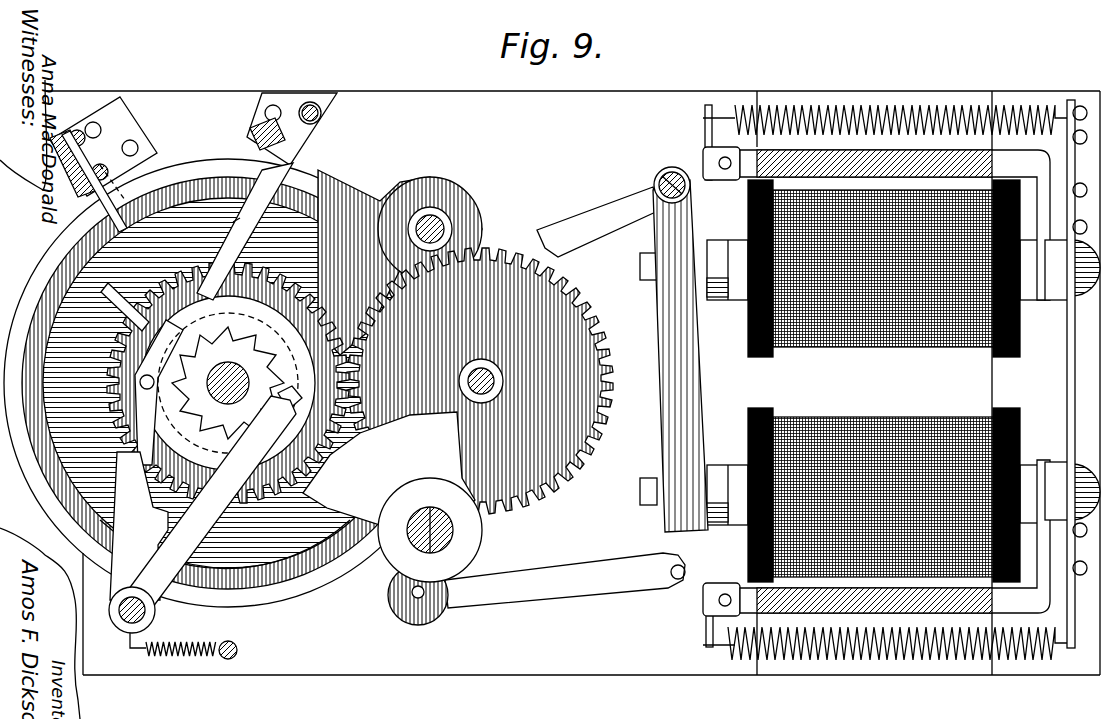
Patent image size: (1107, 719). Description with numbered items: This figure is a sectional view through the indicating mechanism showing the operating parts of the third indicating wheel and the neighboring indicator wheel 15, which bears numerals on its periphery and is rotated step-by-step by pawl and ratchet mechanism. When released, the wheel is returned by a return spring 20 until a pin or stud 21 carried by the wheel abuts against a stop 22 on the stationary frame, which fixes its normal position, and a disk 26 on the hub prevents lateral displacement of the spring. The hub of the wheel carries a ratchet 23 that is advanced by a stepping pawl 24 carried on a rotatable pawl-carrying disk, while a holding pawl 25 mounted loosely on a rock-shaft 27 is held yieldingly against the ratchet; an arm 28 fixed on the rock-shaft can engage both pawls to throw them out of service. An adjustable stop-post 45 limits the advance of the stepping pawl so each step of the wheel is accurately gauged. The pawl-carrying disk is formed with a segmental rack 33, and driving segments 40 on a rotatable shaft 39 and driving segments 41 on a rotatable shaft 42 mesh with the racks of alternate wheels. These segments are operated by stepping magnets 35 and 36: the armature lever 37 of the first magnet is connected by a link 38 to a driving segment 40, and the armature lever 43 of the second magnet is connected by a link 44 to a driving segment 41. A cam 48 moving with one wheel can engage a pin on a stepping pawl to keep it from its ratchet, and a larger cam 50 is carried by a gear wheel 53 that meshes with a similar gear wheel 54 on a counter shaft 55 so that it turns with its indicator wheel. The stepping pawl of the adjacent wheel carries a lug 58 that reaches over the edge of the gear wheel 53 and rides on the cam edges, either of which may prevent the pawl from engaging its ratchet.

The indicator wheel 15 is at (192, 165).
The return spring 20 is at (216, 188).
The pin or stud 21 is at (103, 146).
The stop 22 is at (72, 190).
The ratchet 23 is at (299, 388).
The stepping pawl 24 is at (225, 383).
The holding pawl 25 is at (208, 507).
The disk 26 is at (83, 477).
The rock-shaft 27 is at (145, 610).
The arm 28 is at (139, 526).
The segmental rack 33 is at (225, 540).
The stepping magnet 35 is at (842, 273).
The stepping magnet 36 is at (902, 417).
The armature lever 37 is at (710, 221).
The link 38 is at (556, 565).
The rotatable shaft 39 is at (453, 533).
The driving segment 40 is at (392, 518).
The driving segment 41 is at (468, 194).
The rotatable shaft 42 is at (431, 220).
The armature lever 43 is at (698, 401).
The link 44 is at (584, 212).
The adjustable stop-post 45 is at (233, 222).
The cam 48 is at (228, 383).
The cam 50 is at (228, 383).
The gear wheel 53 is at (228, 383).
The gear wheel 54 is at (480, 381).
The counter shaft 55 is at (491, 373).
The lug 58 is at (97, 287).